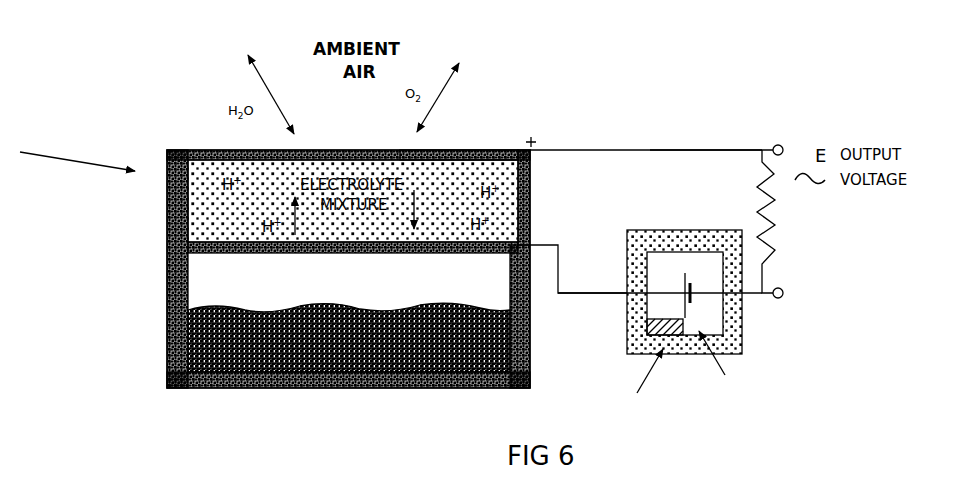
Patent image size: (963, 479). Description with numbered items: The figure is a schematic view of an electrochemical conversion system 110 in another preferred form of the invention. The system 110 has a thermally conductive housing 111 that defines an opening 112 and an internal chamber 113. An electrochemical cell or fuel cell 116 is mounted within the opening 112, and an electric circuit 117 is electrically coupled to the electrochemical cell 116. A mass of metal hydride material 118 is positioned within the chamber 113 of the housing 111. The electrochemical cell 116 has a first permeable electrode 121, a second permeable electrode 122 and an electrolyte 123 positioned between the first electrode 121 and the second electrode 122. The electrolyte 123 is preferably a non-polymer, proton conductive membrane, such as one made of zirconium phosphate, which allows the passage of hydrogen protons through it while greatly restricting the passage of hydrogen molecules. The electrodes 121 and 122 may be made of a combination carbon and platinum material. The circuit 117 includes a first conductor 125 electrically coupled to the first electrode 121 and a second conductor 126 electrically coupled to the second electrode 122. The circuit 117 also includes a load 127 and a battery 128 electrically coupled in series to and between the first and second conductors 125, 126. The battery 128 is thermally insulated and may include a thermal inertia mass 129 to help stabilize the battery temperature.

The electrochemical conversion system 110 is at (539, 86).
The thermally conductive housing 111 is at (531, 188).
The opening 112 is at (506, 136).
The chamber 113 is at (472, 281).
The electrochemical cell 116 is at (203, 183).
The electric circuit 117 is at (688, 143).
The mass of metal hydride material 118 is at (203, 314).
The first permeable electrode 121 is at (203, 149).
The second permeable electrode 122 is at (203, 259).
The electrolyte 123 is at (333, 222).
The first conductor 125 is at (617, 148).
The second conductor 126 is at (577, 298).
The load 127 is at (787, 214).
The battery 128 is at (675, 270).
The thermal inertia mass 129 is at (676, 336).